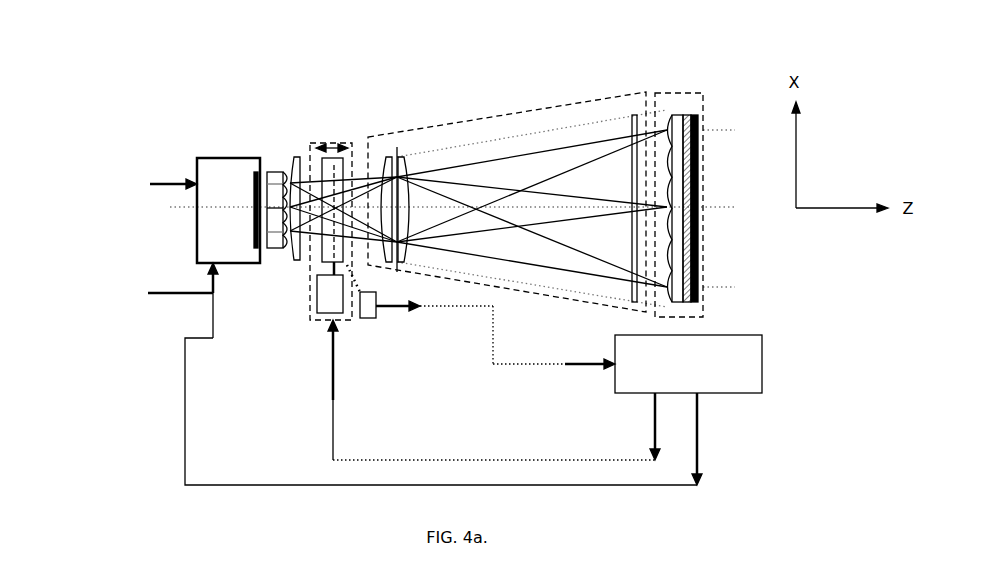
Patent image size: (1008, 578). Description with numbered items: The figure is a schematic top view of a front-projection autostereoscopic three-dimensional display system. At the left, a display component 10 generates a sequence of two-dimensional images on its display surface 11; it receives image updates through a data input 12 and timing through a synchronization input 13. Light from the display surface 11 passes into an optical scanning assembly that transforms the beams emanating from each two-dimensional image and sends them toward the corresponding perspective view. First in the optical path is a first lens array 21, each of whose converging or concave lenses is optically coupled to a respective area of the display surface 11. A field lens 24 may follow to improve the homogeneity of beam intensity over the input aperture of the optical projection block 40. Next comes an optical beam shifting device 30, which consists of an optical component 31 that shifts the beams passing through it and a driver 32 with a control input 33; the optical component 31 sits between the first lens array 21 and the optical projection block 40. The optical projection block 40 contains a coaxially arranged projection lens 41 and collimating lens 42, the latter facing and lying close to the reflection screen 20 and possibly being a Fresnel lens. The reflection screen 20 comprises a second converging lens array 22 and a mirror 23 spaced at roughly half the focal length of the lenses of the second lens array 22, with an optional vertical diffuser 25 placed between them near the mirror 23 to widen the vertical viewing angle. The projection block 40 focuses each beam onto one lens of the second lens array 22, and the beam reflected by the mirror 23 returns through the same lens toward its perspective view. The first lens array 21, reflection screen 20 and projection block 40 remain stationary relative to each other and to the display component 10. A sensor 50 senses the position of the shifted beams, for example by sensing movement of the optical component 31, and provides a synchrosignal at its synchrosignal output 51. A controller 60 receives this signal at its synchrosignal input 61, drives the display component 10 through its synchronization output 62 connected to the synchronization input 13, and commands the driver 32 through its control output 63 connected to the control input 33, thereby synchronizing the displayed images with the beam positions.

The display component 10 is at (197, 232).
The display surface 11 is at (257, 250).
The data input 12 is at (167, 177).
The synchronization input 13 is at (165, 300).
The reflection screen 20 is at (715, 167).
The first lens array 21 is at (280, 172).
The second converging lens array 22 is at (679, 113).
The mirror 23 is at (697, 115).
The field lens 24 is at (294, 160).
The vertical diffuser 25 is at (688, 115).
The optical beam shifting device 30 is at (328, 222).
The optical component 31 is at (333, 172).
The driver 32 is at (313, 305).
The control input 33 is at (337, 358).
The optical projection block 40 is at (507, 166).
The projection lens 41 is at (403, 150).
The collimating lens 42 is at (632, 115).
The sensor 50 is at (370, 318).
The synchrosignal output 51 is at (388, 303).
The controller 60 is at (688, 364).
The synchrosignal input 61 is at (583, 362).
The synchronization output 62 is at (698, 447).
The control output 63 is at (650, 430).